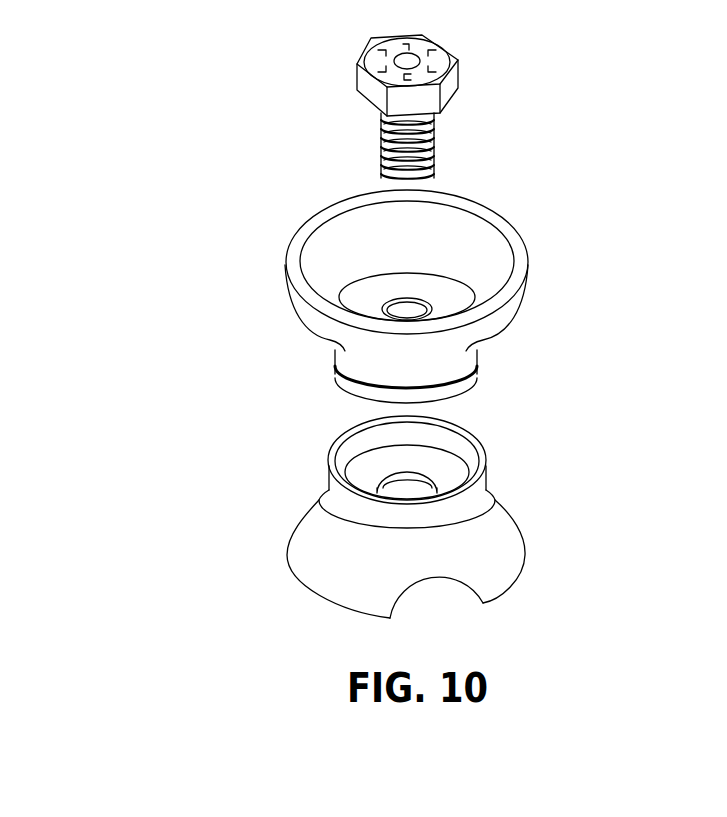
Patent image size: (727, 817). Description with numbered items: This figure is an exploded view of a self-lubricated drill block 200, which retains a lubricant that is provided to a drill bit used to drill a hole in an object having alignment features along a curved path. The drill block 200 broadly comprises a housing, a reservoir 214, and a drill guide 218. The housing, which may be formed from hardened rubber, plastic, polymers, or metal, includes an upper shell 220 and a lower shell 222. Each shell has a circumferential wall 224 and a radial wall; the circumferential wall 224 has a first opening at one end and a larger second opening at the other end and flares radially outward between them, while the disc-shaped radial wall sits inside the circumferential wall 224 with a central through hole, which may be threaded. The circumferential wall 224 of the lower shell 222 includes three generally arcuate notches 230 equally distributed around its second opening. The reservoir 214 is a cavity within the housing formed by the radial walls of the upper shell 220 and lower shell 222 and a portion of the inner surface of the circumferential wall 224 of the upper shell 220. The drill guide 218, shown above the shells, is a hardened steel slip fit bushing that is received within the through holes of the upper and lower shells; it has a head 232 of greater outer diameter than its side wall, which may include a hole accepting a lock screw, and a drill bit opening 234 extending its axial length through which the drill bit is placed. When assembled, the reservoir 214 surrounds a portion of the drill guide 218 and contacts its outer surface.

The self-lubricated drill block 200 is at (122, 226).
The drill guide 218 is at (464, 113).
The head 232 is at (362, 82).
The drill bit opening 234 is at (411, 56).
The upper shell 220 is at (255, 316).
The circumferential wall 224 is at (503, 310).
The lower shell 222 is at (256, 539).
The reservoir 214 is at (347, 472).
The notch 230 is at (452, 604).